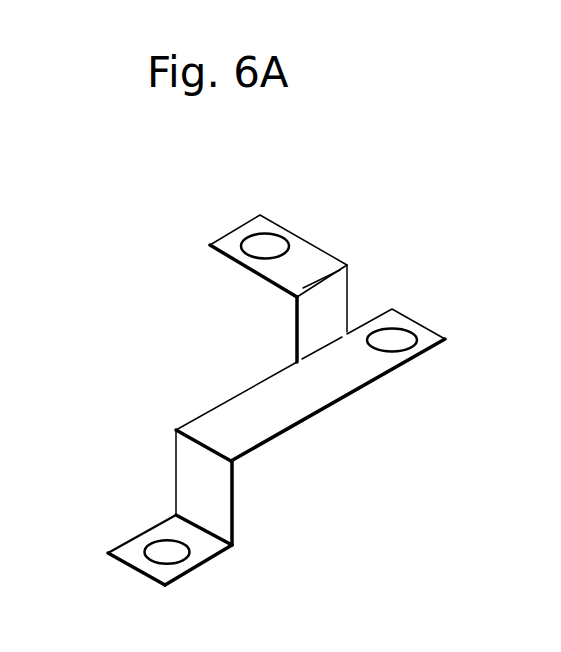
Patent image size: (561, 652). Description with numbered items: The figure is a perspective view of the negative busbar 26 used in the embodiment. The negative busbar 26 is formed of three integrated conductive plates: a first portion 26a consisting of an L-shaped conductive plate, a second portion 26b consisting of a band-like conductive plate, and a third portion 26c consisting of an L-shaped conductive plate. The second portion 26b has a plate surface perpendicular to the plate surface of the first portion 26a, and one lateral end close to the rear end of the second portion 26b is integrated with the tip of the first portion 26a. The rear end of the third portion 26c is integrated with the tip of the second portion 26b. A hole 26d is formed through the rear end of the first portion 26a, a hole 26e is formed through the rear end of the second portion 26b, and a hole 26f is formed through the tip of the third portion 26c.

The negative busbar 26 is at (254, 391).
The first portion 26a is at (285, 230).
The second portion 26b is at (280, 413).
The third portion 26c is at (205, 546).
The hole 26d is at (265, 248).
The hole 26e is at (392, 340).
The hole 26f is at (170, 552).